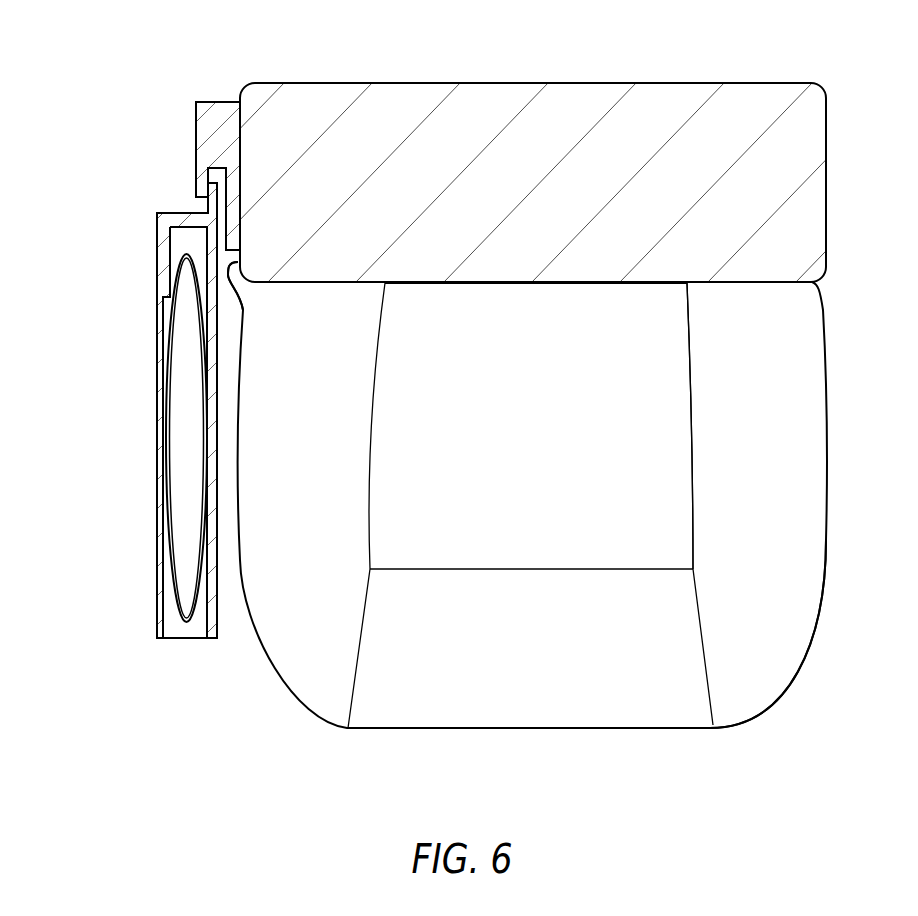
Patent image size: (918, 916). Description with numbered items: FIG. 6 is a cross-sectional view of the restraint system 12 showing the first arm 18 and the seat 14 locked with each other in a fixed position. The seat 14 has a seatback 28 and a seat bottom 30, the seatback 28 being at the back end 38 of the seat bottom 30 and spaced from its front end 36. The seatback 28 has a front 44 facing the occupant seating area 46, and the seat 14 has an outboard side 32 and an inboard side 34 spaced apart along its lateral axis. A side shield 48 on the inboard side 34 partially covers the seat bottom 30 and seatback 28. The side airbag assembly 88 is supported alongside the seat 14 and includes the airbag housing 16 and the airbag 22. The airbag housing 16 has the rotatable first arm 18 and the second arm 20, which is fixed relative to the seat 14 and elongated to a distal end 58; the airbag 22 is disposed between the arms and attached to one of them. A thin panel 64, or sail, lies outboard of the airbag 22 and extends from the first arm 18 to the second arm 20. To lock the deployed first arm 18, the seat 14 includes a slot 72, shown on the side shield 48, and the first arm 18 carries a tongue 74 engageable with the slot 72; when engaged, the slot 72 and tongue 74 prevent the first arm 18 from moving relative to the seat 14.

The restraint system 12 is at (80, 93).
The seat 14 is at (830, 104).
The seatback 28 is at (828, 145).
The outboard side 32 is at (828, 252).
The side shield 48 is at (215, 123).
The slot 72 is at (196, 185).
The tongue 74 is at (226, 202).
The first arm 18 is at (157, 248).
The airbag housing 16 is at (138, 267).
The side airbag assembly 88 is at (103, 320).
The panel 64 is at (157, 420).
The airbag 22 is at (208, 355).
The distal end 58 is at (164, 640).
The second arm 20 is at (217, 640).
The occupant seating area 46 is at (667, 489).
The inboard side 34 is at (234, 280).
The front 44 is at (578, 284).
The back end 38 is at (732, 284).
The front end 36 is at (497, 726).
The seat bottom 30 is at (740, 722).